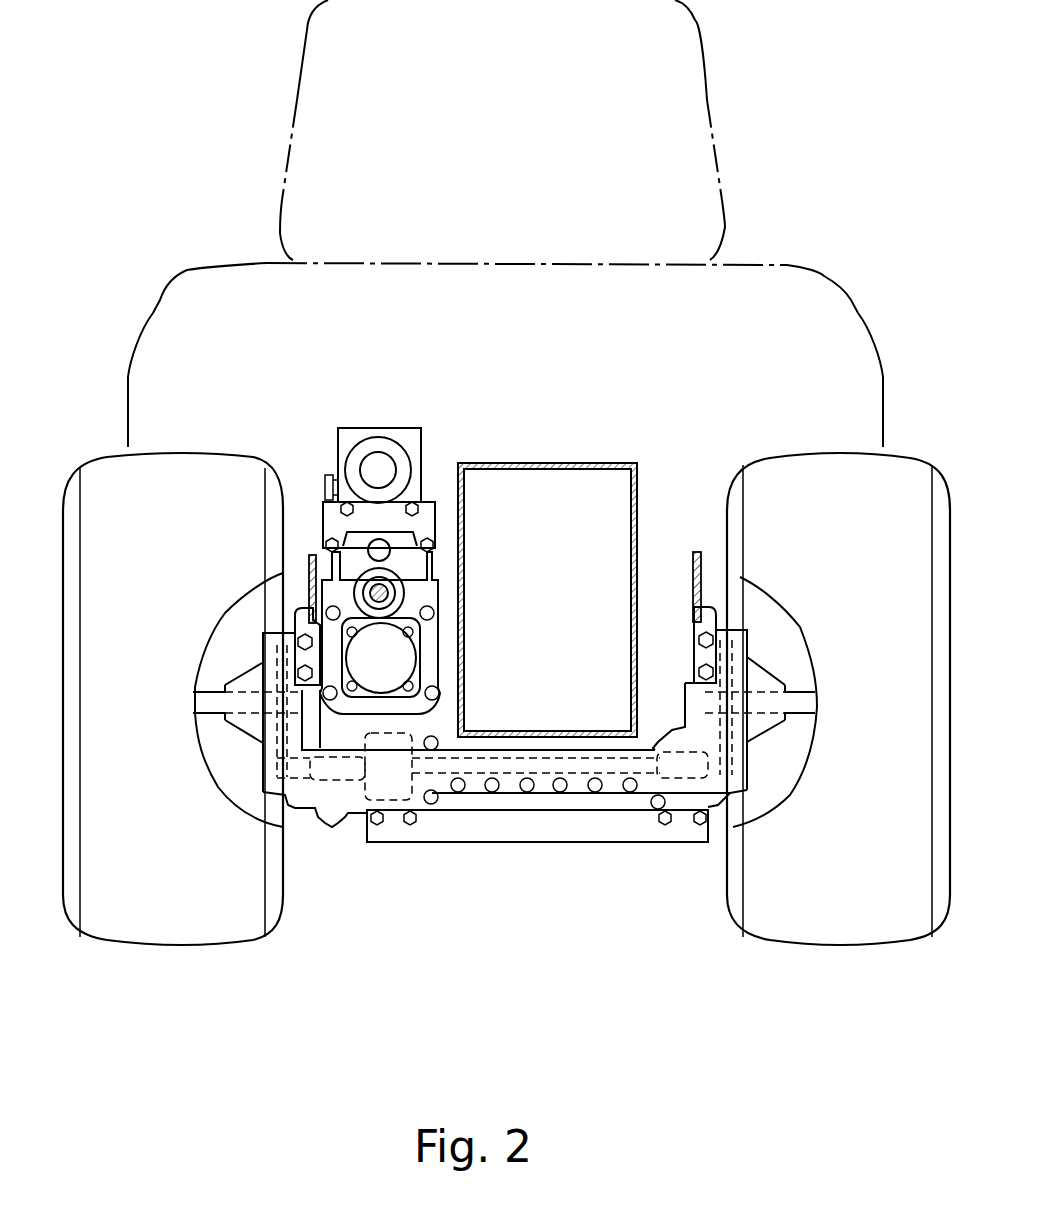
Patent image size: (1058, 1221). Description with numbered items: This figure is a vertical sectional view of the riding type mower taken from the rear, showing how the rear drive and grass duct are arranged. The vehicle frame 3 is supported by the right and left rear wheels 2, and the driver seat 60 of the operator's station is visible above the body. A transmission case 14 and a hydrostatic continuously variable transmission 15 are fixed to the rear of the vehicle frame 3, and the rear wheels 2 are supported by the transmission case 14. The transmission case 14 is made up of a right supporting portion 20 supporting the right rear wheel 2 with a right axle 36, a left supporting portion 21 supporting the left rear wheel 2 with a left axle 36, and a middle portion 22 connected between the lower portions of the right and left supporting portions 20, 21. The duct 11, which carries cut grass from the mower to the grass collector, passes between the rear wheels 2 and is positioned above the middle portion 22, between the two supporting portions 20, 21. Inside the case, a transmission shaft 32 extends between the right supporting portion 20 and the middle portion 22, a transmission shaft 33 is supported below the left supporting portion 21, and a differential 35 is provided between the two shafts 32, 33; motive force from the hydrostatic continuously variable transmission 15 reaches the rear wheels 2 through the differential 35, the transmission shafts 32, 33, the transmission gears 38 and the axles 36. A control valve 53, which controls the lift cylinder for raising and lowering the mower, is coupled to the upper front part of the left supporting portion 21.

The rear wheel 2 is at (185, 948).
The vehicle frame 3 is at (309, 573).
The duct 11 is at (547, 463).
The transmission case 14 is at (494, 729).
The hydrostatic continuously variable transmission 15 is at (410, 572).
The right supporting portion 20 is at (742, 628).
The left supporting portion 21 is at (263, 634).
The middle portion 22 is at (590, 810).
The transmission shaft 32 is at (510, 776).
The transmission shaft 33 is at (336, 828).
The differential 35 is at (402, 800).
The axle 36 is at (212, 692).
The transmission gear 38 is at (262, 733).
The control valve 53 is at (379, 428).
The driver seat 60 is at (297, 97).